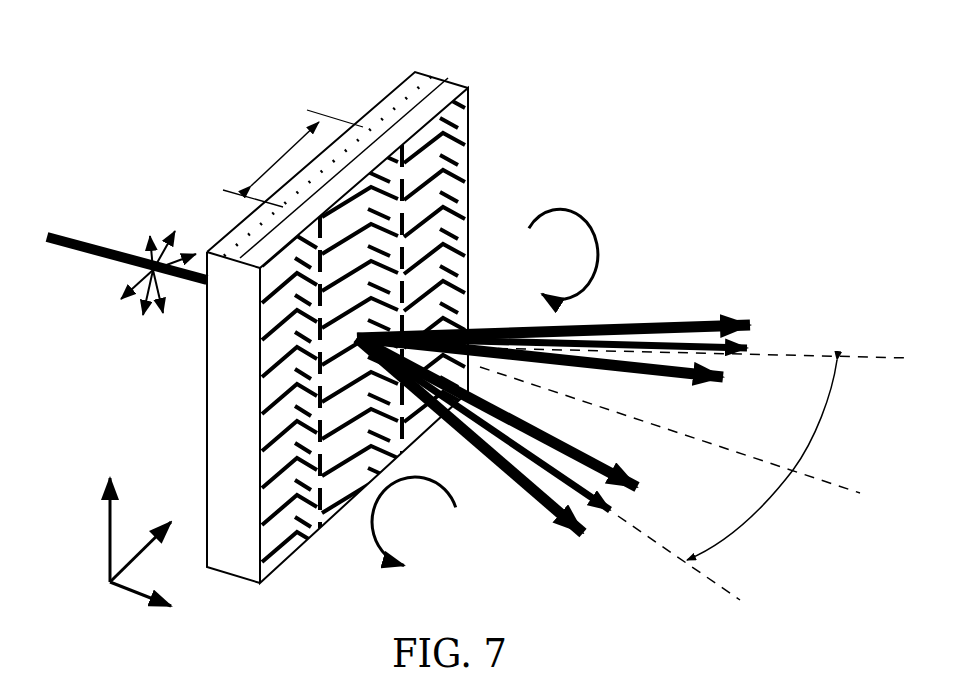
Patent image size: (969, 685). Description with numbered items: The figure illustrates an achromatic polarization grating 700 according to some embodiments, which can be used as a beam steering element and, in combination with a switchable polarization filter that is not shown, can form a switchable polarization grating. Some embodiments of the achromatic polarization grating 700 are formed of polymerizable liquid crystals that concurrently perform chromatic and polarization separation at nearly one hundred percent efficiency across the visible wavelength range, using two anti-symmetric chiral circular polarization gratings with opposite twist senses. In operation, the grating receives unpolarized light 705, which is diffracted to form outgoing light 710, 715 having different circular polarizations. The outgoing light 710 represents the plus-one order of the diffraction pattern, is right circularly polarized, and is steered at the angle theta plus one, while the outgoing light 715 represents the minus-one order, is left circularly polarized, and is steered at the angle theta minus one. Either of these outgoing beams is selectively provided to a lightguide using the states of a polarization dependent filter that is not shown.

The achromatic polarization grating 700 is at (714, 83).
The unpolarized light 705 is at (77, 258).
The outgoing light 710 is at (640, 300).
The outgoing light 715 is at (498, 492).